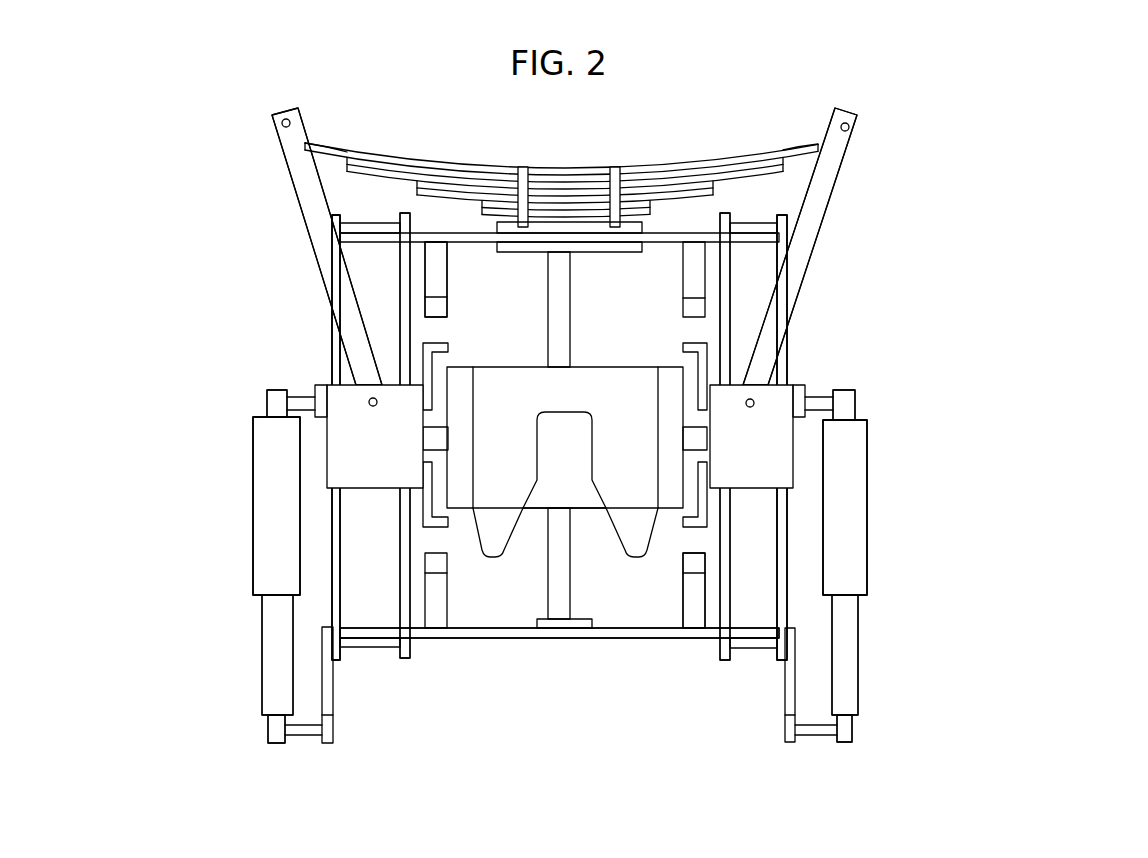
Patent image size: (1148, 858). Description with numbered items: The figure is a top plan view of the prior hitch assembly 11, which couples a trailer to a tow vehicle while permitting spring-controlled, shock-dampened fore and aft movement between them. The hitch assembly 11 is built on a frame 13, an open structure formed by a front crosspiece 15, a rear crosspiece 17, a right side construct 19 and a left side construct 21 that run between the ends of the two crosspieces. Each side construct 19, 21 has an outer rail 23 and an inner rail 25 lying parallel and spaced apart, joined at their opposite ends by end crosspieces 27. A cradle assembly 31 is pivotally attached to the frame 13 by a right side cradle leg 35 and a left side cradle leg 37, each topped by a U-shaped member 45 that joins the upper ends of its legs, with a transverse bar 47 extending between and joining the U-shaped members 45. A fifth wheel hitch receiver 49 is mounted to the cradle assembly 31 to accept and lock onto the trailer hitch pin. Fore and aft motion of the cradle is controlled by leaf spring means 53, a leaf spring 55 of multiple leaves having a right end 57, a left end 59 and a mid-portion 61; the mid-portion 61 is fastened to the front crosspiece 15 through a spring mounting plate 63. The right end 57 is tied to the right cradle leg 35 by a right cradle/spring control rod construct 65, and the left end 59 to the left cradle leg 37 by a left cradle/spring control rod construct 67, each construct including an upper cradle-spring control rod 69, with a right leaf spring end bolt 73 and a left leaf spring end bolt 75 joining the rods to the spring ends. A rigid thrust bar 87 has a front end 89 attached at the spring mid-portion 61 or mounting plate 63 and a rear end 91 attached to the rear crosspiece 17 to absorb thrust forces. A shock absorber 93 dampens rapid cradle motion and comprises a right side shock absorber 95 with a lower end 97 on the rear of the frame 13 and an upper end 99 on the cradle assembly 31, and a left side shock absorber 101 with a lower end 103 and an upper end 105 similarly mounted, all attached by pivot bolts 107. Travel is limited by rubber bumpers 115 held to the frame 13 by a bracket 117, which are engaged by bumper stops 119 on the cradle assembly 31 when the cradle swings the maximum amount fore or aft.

The hitch assembly 11 is at (810, 46).
The frame 13 is at (491, 642).
The front crosspiece 15 is at (694, 236).
The rear crosspiece 17 is at (670, 638).
The right side construct 19 is at (825, 347).
The left side construct 21 is at (333, 344).
The outer rail 23 is at (333, 368).
The inner rail 25 is at (398, 268).
The end crosspieces 27 is at (366, 222).
The cradle assembly 31 is at (812, 528).
The right side cradle leg 35 is at (773, 464).
The left side cradle leg 37 is at (337, 463).
The U-shaped member 45 is at (362, 478).
The bar 47 is at (438, 427).
The hitch receiver 49 is at (618, 358).
The leaf spring means 53 is at (396, 106).
The leaf spring 55 is at (575, 172).
The right end 57 is at (813, 126).
The left end 59 is at (320, 144).
The mid-portion 61 is at (590, 171).
The spring mounting plate 63 is at (533, 247).
The right cradle/spring control rod construct 65 is at (852, 163).
The left cradle/spring control rod construct 67 is at (280, 172).
The upper cradle-spring control rod 69 is at (300, 191).
The right leaf spring end bolt 73 is at (850, 126).
The left leaf spring end bolt 75 is at (281, 124).
The thrust bar 87 is at (551, 573).
The front end 89 is at (565, 273).
The rear end 91 is at (567, 602).
The shock absorber 93 is at (250, 654).
The right side shock absorber 95 is at (862, 582).
The lower end 97 is at (858, 697).
The upper end 99 is at (857, 438).
The left side shock absorber 101 is at (265, 563).
The lower end 103 is at (267, 703).
The upper end 105 is at (263, 435).
The pivot bolts 107 is at (303, 393).
The rubber bumpers 115 is at (441, 310).
The bracket 117 is at (436, 250).
The bumper stops 119 is at (433, 343).